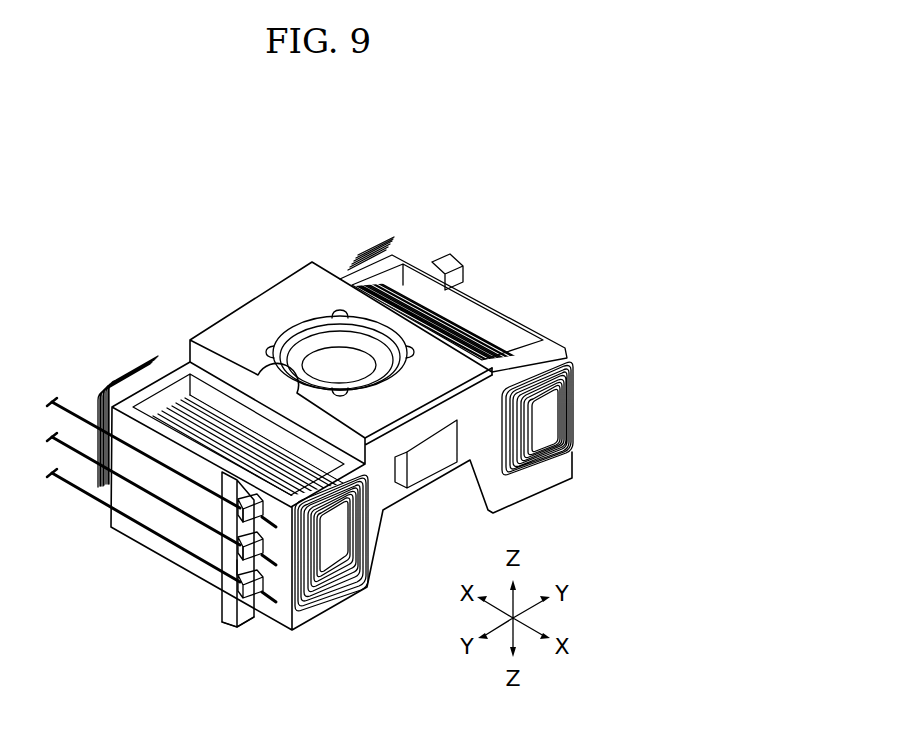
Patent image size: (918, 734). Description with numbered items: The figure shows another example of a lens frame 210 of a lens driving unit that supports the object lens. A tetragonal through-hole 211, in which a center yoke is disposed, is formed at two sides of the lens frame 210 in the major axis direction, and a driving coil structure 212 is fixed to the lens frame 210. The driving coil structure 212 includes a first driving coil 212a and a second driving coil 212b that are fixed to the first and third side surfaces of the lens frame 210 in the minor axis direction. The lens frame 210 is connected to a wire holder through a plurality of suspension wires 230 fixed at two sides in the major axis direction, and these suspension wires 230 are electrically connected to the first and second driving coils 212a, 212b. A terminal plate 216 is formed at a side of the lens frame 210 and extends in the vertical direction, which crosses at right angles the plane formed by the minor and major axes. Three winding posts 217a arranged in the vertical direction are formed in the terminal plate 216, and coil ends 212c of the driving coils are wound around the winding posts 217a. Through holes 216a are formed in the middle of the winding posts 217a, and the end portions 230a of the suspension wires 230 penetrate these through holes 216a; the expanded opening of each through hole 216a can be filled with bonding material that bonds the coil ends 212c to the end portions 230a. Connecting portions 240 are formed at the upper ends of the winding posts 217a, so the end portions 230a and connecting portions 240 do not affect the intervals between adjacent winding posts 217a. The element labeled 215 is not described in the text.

The lens frame 210 is at (316, 236).
The tetragonal through-hole 211 is at (224, 388).
The driving coil structure 212 is at (143, 289).
The first driving coil 212a is at (366, 243).
The second driving coil 212b is at (187, 392).
The coil ends 212c is at (230, 568).
The lens opening 215 is at (318, 368).
The terminal plate 216 is at (450, 262).
The through holes 216a is at (233, 614).
The winding posts 217a is at (258, 604).
The suspension wires 230 is at (57, 417).
The end portions of the suspension wires 230a is at (267, 603).
The connecting portions 240 is at (228, 538).